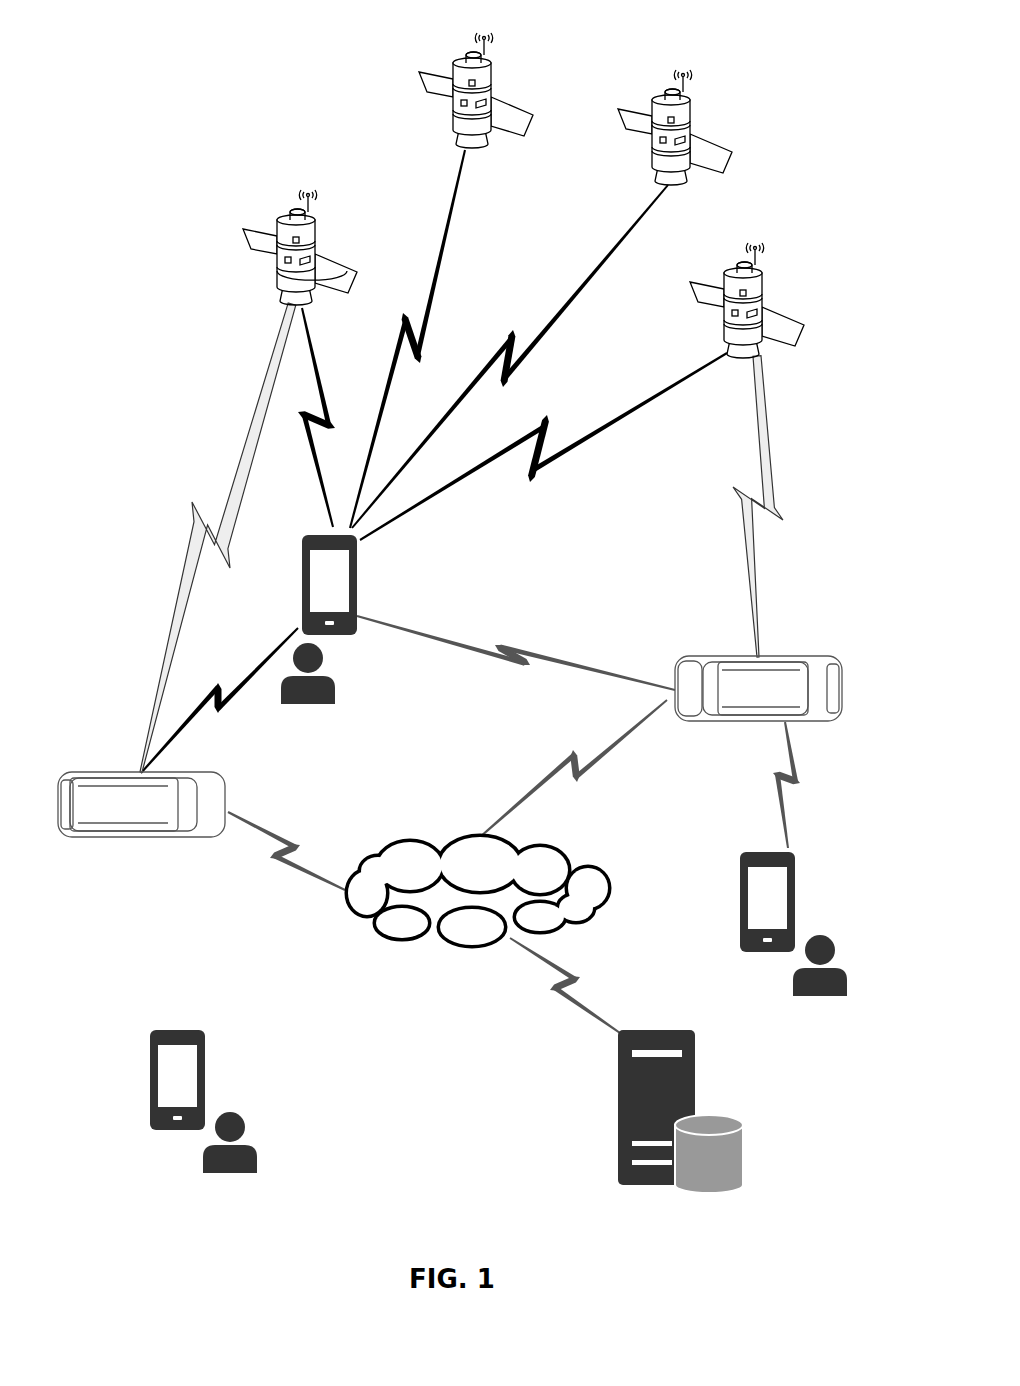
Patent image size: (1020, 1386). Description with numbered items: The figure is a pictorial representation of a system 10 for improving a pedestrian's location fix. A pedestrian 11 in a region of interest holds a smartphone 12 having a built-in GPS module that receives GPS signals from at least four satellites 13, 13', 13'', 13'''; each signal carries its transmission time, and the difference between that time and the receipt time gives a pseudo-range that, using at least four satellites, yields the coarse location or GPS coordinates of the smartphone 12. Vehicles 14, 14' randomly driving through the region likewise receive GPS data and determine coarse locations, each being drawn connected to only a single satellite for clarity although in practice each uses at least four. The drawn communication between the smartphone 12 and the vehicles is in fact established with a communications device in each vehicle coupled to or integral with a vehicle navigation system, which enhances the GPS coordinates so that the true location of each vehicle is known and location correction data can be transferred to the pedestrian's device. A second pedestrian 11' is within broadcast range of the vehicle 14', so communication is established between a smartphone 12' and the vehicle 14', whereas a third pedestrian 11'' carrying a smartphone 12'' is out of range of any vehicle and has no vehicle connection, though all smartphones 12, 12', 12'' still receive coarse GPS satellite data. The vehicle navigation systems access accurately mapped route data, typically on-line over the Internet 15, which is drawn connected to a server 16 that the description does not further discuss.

The system 10 is at (638, 1234).
The pedestrian 11 is at (335, 693).
The second pedestrian 11' is at (803, 990).
The third pedestrian 11'' is at (265, 1164).
The smartphone 12 is at (329, 585).
The smartphone 12' is at (767, 902).
The smartphone 12'' is at (177, 1080).
The satellite 13 is at (324, 246).
The satellite 13' is at (502, 89).
The satellite 13'' is at (700, 124).
The satellite 13''' is at (775, 295).
The vehicle 14 is at (141, 804).
The vehicle 14' is at (758, 688).
The Internet 15 is at (350, 913).
The server 16 is at (618, 1118).